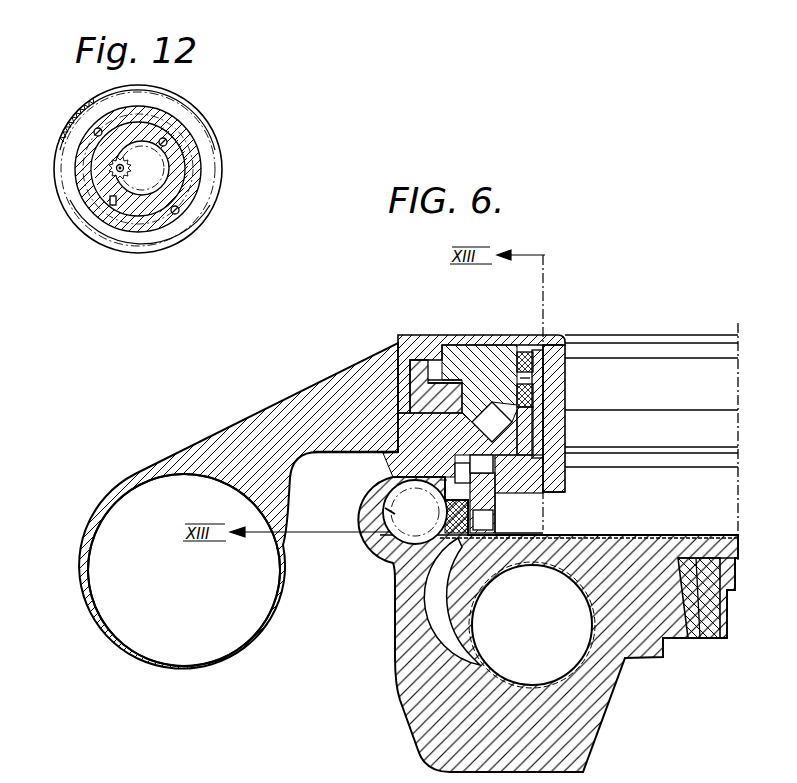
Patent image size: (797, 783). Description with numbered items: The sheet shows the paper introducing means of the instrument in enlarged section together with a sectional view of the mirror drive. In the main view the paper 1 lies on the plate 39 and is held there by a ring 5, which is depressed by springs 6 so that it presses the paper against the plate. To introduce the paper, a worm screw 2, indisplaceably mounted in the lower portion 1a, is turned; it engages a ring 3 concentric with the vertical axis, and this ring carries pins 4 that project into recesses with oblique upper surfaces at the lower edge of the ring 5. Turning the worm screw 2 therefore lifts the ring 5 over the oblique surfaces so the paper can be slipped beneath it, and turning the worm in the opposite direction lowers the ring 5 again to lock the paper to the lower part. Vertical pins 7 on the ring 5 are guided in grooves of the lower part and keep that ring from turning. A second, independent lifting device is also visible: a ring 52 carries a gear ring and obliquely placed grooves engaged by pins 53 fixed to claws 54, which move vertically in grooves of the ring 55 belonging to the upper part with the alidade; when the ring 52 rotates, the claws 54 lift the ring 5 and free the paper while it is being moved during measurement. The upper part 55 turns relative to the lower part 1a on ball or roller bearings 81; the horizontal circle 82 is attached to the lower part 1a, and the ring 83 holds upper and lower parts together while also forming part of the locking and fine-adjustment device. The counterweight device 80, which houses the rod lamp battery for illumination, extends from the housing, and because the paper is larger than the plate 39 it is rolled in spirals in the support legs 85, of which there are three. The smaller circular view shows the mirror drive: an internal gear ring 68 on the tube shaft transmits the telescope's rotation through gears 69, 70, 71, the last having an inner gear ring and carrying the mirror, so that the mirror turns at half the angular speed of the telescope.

In FIG. 12, the internal gear ring 68 is at (198, 112).
In FIG. 12, the gear 69 is at (90, 120).
In FIG. 12, the gear 70 is at (115, 177).
In FIG. 12, the gear with inner gear ring 71 is at (173, 167).
In FIG. 6, the counterweight device 80 is at (298, 420).
In FIG. 6, the ring 83 is at (397, 355).
In FIG. 6, the horizontal circle 82 is at (443, 352).
In FIG. 6, the ball or roller bearings 81 is at (484, 416).
In FIG. 6, the ring (alidade / upper part) 55 is at (497, 363).
In FIG. 6, the pins 53 is at (522, 333).
In FIG. 6, the claws 54 is at (538, 380).
In FIG. 6, the ring 52 is at (545, 400).
In FIG. 6, the lower portion 1a is at (372, 452).
In FIG. 6, the vertical pins 7 is at (393, 477).
In FIG. 6, the worm screw 2 is at (393, 520).
In FIG. 6, the ring 3 is at (393, 563).
In FIG. 6, the springs 6 is at (483, 460).
In FIG. 6, the ring 5 is at (497, 505).
In FIG. 6, the paper 1 is at (648, 538).
In FIG. 6, the pins 4 is at (480, 518).
In FIG. 6, the plate 39 is at (647, 580).
In FIG. 6, the support legs 85 is at (568, 728).